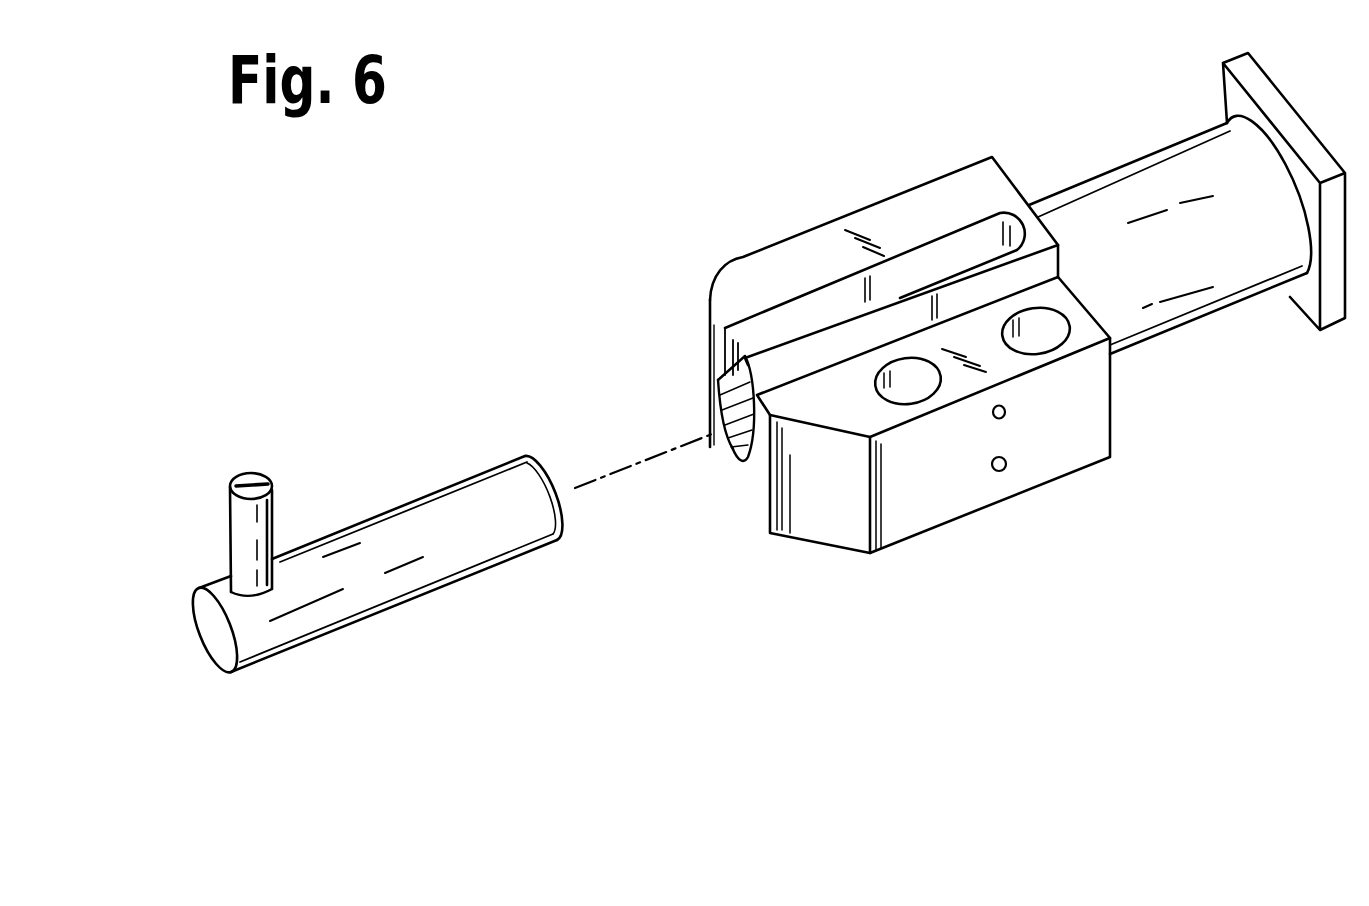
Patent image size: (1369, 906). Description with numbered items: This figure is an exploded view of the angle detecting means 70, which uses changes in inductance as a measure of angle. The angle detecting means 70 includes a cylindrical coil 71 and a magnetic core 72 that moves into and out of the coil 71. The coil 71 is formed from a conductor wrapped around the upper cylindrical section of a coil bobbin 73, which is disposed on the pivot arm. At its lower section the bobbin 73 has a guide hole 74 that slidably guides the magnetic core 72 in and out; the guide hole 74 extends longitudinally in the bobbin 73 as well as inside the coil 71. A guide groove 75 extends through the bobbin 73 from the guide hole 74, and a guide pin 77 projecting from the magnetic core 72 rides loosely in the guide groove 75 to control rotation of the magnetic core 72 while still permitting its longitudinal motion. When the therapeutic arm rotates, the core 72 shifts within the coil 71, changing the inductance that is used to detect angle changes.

The angle detecting means 70 is at (577, 703).
The cylindrical coil 71 is at (1210, 297).
The magnetic core 72 is at (417, 552).
The coil bobbin 73 is at (886, 359).
The guide hole 74 is at (728, 462).
The guide groove 75 is at (815, 318).
The guide pin 77 is at (232, 489).